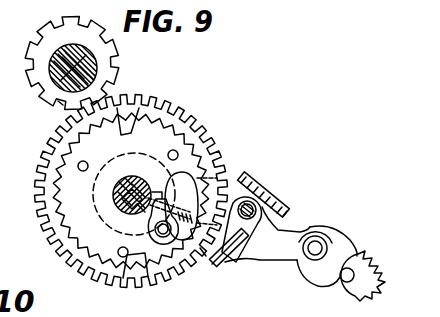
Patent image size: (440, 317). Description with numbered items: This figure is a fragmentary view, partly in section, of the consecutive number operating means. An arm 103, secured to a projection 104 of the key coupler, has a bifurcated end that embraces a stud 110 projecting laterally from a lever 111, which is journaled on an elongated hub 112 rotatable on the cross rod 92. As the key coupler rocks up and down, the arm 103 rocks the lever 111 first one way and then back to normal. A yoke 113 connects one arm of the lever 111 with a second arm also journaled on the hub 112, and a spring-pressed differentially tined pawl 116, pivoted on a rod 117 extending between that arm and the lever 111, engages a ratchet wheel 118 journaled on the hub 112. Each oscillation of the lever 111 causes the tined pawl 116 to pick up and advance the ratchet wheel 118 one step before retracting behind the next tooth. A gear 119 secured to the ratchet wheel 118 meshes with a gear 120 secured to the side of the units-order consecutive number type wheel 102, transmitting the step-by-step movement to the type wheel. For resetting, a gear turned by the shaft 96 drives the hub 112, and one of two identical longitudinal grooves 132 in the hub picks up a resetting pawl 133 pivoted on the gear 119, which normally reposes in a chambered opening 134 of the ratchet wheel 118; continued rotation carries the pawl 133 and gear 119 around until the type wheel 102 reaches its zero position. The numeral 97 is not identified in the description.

The cross rod 92 is at (112, 215).
The shaft 96 is at (81, 52).
The hub 97 is at (55, 56).
The consecutive number type wheel 102 is at (116, 62).
The arm 103 is at (304, 272).
The projection of the key coupler 104 is at (376, 249).
The stud 110 is at (314, 235).
The lever 111 is at (94, 205).
The elongated hub 112 is at (149, 163).
The yoke 113 is at (253, 182).
The differentially tined pawl 116 is at (206, 259).
The rod 117 is at (262, 200).
The ratchet wheel 118 is at (170, 278).
The gear 119 is at (197, 128).
The gear 120 is at (58, 108).
The longitudinal groove 132 is at (112, 190).
The resetting pawl 133 is at (169, 193).
The chambered opening 134 is at (194, 172).